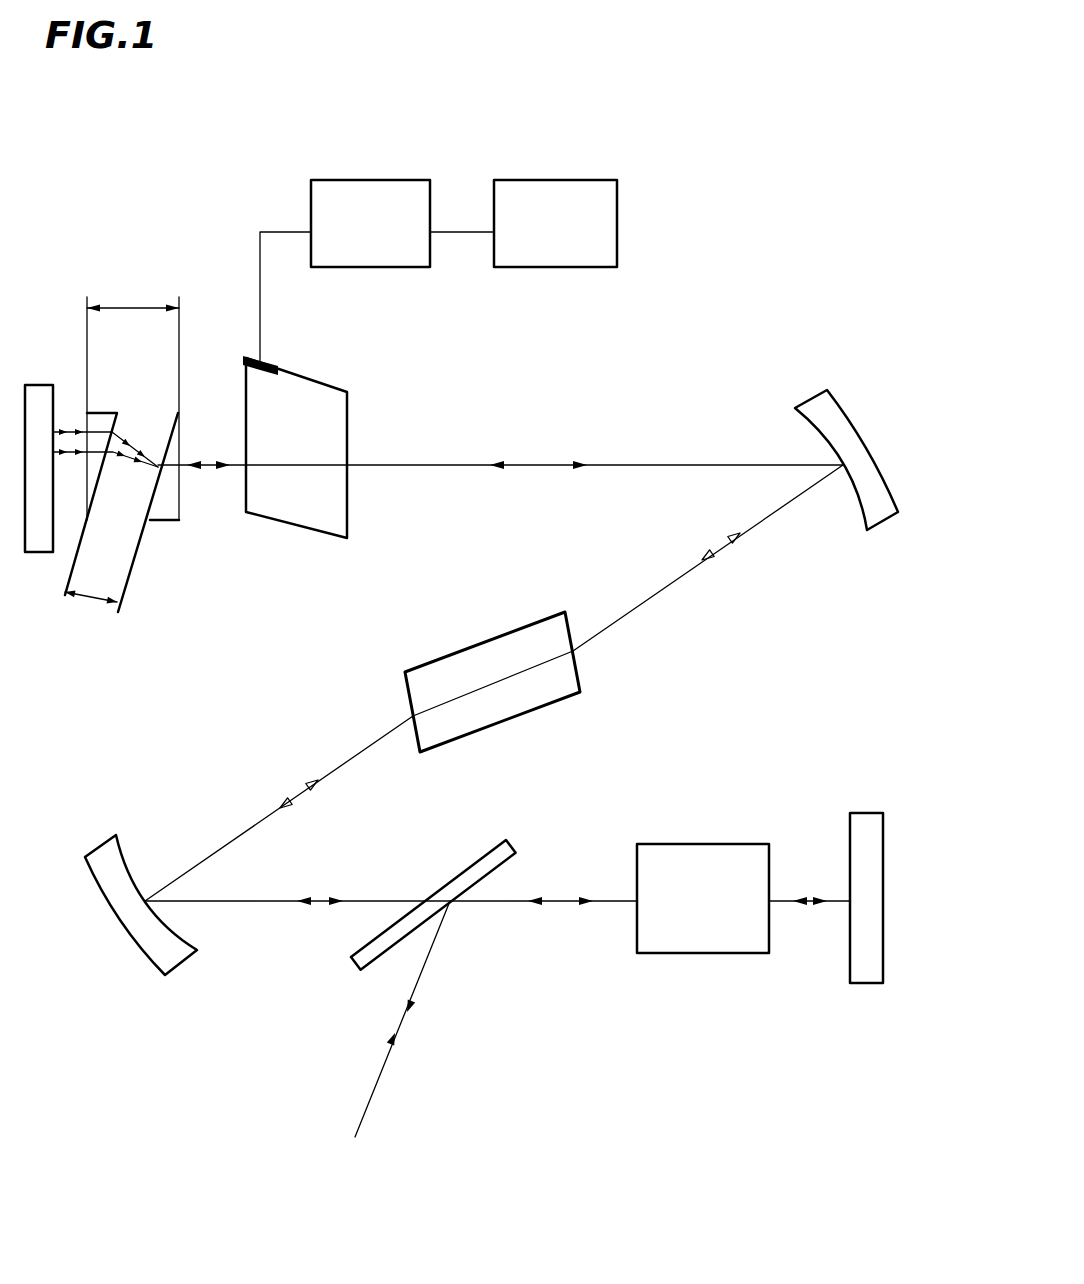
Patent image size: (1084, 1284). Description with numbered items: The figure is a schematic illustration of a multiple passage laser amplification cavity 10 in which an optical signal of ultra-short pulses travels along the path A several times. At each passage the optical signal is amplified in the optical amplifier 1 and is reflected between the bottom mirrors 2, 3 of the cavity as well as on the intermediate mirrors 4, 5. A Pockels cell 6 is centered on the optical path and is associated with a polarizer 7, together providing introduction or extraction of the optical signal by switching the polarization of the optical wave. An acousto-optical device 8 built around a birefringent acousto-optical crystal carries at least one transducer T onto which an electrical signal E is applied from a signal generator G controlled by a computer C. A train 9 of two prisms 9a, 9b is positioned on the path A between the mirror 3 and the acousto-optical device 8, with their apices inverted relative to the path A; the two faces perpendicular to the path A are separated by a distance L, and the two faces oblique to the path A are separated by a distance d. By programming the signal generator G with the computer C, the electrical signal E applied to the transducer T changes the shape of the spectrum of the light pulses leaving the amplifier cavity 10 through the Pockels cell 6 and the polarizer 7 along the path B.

The optical amplifier 1 is at (532, 712).
The bottom mirror 2 is at (868, 983).
The bottom mirror 3 is at (33, 385).
The intermediate mirror 4 is at (135, 935).
The intermediate mirror 5 is at (852, 422).
The Pockels cell 6 is at (688, 953).
The polarizer 7 is at (350, 958).
The acousto-optical device 8 is at (335, 388).
The train of two prisms 9 is at (159, 470).
The prism 9a is at (100, 477).
The prism 9b is at (182, 513).
The laser amplification cavity 10 is at (633, 397).
The path A is at (680, 578).
The path B is at (373, 1093).
The computer C is at (557, 180).
The electrical signal E is at (260, 262).
The signal generator G is at (372, 180).
The transducer T is at (268, 364).
The distance L is at (133, 401).
The distance d is at (91, 586).